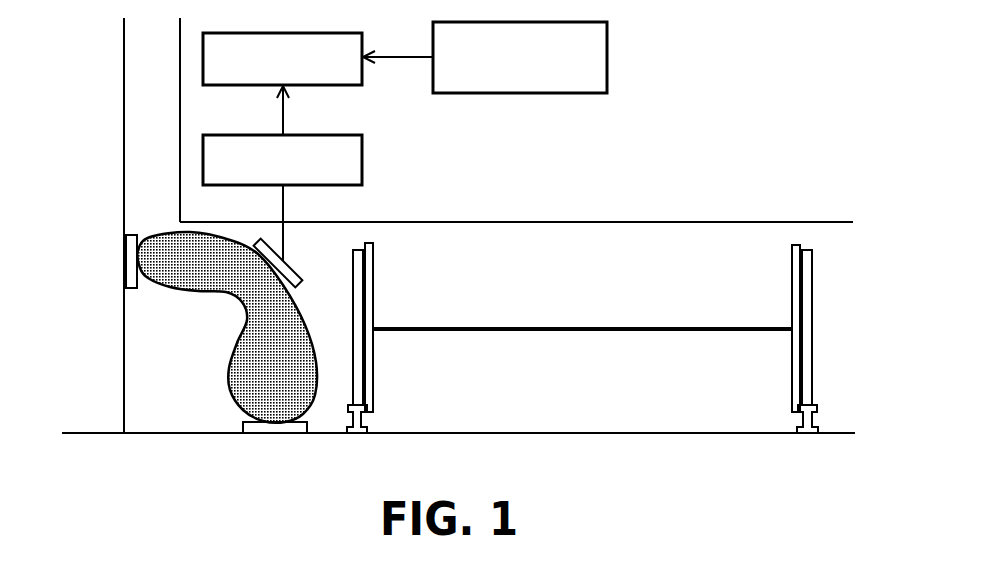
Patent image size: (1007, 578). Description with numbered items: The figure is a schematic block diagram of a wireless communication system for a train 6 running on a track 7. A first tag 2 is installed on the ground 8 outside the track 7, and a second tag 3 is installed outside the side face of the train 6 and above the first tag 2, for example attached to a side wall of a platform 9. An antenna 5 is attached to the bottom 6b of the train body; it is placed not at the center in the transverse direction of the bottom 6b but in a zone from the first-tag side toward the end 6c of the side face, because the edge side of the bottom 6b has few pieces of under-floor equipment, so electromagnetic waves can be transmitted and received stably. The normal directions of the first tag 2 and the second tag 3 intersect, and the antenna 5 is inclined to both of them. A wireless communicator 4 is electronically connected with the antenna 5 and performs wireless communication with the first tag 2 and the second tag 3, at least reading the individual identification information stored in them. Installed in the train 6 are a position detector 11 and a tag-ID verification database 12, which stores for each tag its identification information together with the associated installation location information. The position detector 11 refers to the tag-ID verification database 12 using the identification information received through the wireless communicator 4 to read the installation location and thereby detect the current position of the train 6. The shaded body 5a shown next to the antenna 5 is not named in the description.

The first tag 2 is at (238, 422).
The second tag 3 is at (128, 292).
The wireless communicator 4 is at (362, 163).
The antenna 5 is at (297, 268).
The person 5a is at (248, 357).
The train 6 is at (181, 113).
The bottom 6b is at (525, 224).
The end 6c is at (172, 224).
The track 7 is at (362, 420).
The ground 8 is at (225, 435).
The platform 9 is at (107, 180).
The position detector 11 is at (317, 87).
The tag-ID verification database 12 is at (560, 93).